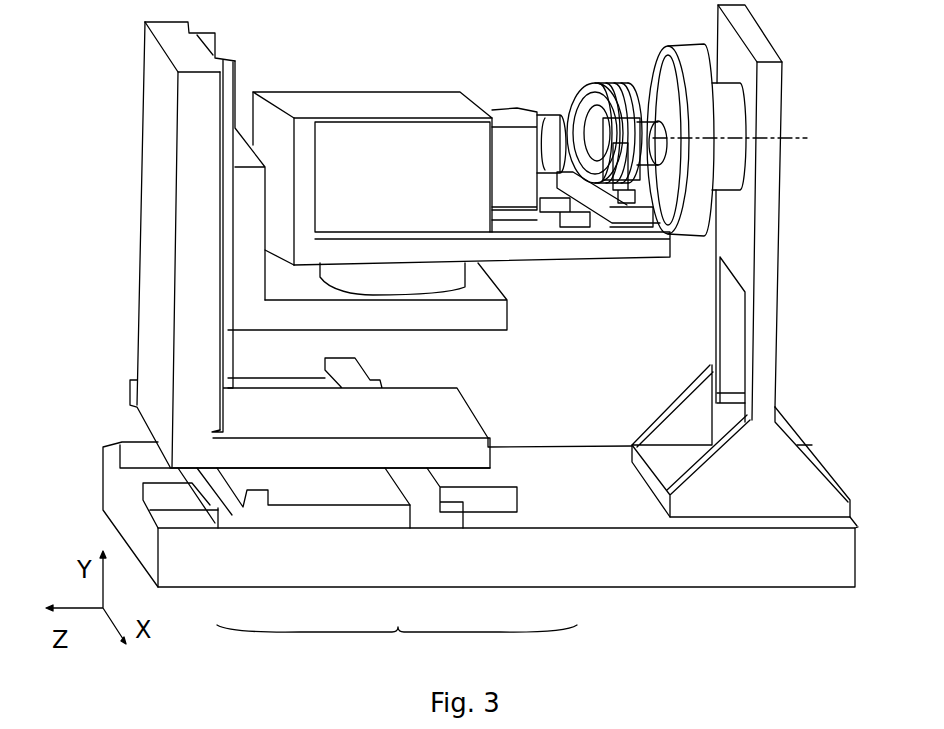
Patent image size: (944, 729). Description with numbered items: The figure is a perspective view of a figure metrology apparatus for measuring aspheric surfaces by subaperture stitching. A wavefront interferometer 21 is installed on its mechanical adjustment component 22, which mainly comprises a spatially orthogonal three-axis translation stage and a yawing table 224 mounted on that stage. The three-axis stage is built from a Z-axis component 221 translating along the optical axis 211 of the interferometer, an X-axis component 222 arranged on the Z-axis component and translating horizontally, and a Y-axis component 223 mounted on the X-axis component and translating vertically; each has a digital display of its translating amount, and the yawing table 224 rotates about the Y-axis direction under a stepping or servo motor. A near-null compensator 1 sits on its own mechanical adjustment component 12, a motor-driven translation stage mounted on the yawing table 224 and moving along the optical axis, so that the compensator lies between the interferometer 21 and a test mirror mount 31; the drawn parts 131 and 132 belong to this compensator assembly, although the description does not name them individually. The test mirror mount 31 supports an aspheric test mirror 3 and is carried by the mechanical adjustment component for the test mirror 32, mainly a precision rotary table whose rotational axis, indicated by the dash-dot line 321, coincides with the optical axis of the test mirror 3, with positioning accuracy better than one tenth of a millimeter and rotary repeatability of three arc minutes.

The near-null compensator 1 is at (614, 86).
The aspheric test mirror 3 is at (670, 182).
The mechanical adjustment component for the near-null compensator 12 is at (584, 240).
The wavefront interferometer 21 is at (409, 103).
The mechanical adjustment component for the wavefront interferometer 22 is at (397, 646).
The test mirror mount 31 is at (698, 187).
The mechanical adjustment component for the test mirror 32 is at (733, 160).
The ring 131 is at (577, 90).
The pulley 132 is at (612, 84).
The optical axis 211 is at (562, 152).
The Z-axis component 221 is at (500, 498).
The X-axis component 222 is at (430, 497).
The Y-axis component 223 is at (215, 408).
The yawing table 224 is at (443, 273).
The rotation axis 321 is at (805, 137).